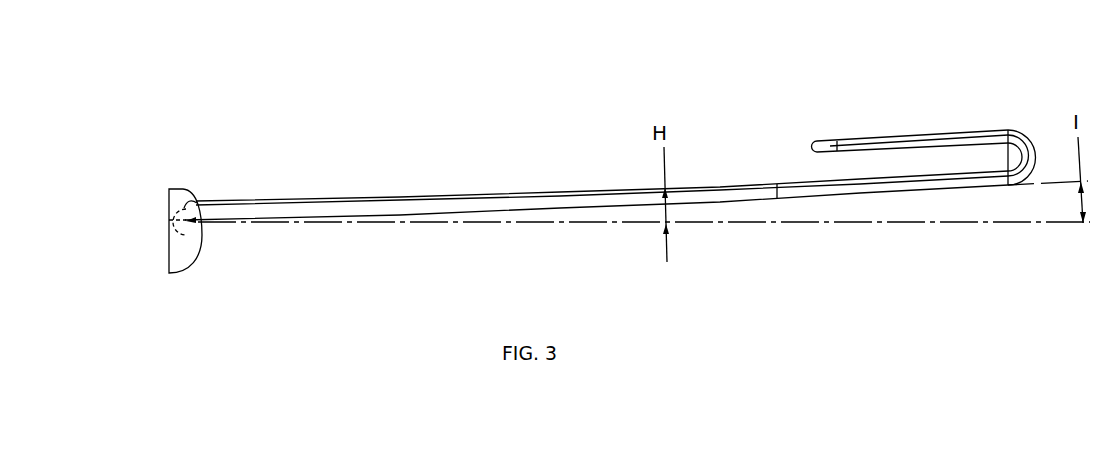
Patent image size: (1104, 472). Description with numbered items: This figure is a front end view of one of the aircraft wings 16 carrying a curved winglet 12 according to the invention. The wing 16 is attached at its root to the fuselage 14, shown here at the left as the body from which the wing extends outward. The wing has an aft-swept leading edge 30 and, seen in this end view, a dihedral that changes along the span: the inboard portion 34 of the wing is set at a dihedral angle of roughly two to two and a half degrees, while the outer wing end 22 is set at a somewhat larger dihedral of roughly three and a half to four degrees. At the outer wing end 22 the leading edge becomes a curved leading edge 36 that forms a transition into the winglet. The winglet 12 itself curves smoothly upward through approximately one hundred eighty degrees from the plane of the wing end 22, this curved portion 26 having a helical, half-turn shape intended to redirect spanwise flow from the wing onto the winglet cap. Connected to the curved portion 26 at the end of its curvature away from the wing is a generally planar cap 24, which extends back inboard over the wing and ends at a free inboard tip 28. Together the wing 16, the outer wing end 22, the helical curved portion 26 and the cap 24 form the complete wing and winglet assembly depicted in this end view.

The winglet 12 is at (626, 140).
The fuselage 14 is at (183, 188).
The wing 16 is at (596, 159).
The outer wing end 22 is at (909, 197).
The cap 24 is at (891, 110).
The curved portion 26 is at (1024, 132).
The tip 28 is at (813, 146).
The leading edge 30 is at (342, 206).
The inboard portion 34 is at (588, 182).
The curved leading edge 36 is at (996, 186).